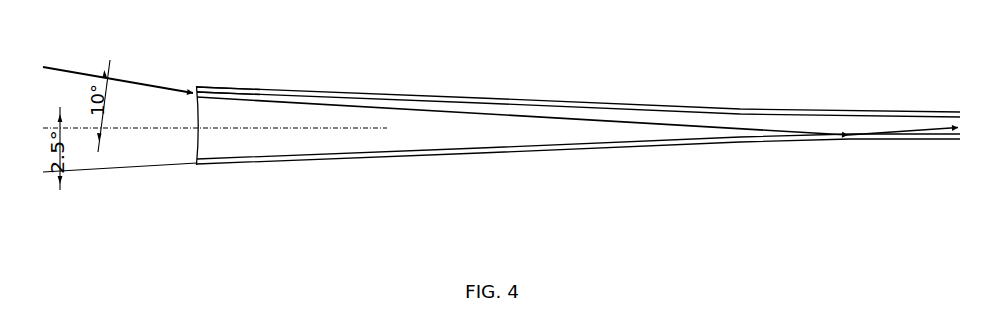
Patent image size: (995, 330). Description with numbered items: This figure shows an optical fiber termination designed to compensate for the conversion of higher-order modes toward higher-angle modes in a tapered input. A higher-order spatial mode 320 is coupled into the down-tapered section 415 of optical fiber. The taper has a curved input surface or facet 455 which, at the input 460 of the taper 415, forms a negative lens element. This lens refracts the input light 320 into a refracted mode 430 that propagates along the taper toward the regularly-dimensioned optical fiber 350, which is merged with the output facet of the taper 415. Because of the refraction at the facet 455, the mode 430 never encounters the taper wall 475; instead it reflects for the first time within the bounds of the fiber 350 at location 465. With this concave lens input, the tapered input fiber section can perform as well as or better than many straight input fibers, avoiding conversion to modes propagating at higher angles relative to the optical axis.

The higher-order spatial mode 320 is at (63, 67).
The regularly-dimensioned optical fiber 350 is at (865, 111).
The down-tapered section 415 is at (245, 145).
The refracted mode 430 is at (538, 133).
The input surface or facet 455 is at (195, 147).
The input of the taper 460 is at (193, 84).
The location 465 is at (852, 142).
The taper wall 475 is at (400, 94).